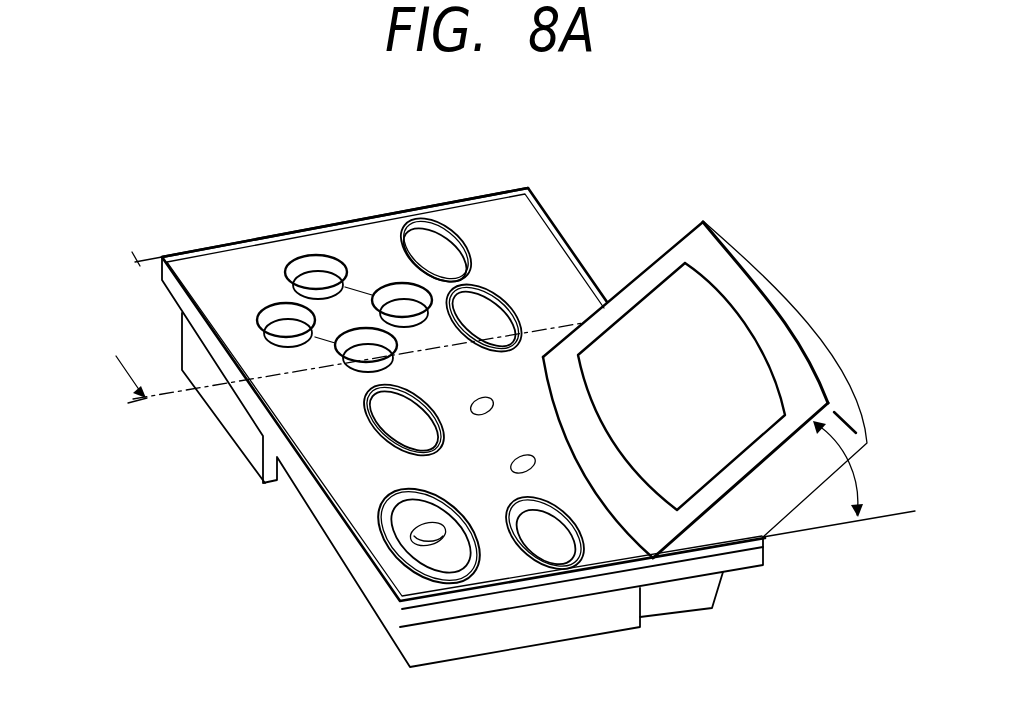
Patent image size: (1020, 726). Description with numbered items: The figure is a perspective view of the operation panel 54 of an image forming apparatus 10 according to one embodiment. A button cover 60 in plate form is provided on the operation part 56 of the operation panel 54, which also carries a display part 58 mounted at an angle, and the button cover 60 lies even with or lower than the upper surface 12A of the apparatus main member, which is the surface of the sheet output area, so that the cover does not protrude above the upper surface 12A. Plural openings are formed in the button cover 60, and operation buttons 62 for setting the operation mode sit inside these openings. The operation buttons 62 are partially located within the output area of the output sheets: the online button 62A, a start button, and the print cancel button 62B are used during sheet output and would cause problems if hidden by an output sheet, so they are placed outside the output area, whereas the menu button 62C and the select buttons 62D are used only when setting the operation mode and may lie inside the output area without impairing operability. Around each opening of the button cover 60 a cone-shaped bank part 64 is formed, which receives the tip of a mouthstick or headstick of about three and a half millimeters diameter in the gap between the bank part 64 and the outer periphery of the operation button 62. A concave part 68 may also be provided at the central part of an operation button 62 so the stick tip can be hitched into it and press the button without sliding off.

The image forming apparatus 10 is at (758, 162).
The upper surface 12A is at (497, 172).
The operation panel 54 is at (655, 125).
The operation part 56 is at (556, 229).
The display screen 58 is at (638, 287).
The button cover 60 is at (303, 244).
The operation buttons 62 is at (490, 323).
The online button 62A is at (403, 427).
The print cancel button 62B is at (418, 556).
The menu button 62C is at (448, 252).
The select buttons 62D is at (305, 283).
The bank part 64 is at (423, 227).
The concave part 68 is at (448, 540).